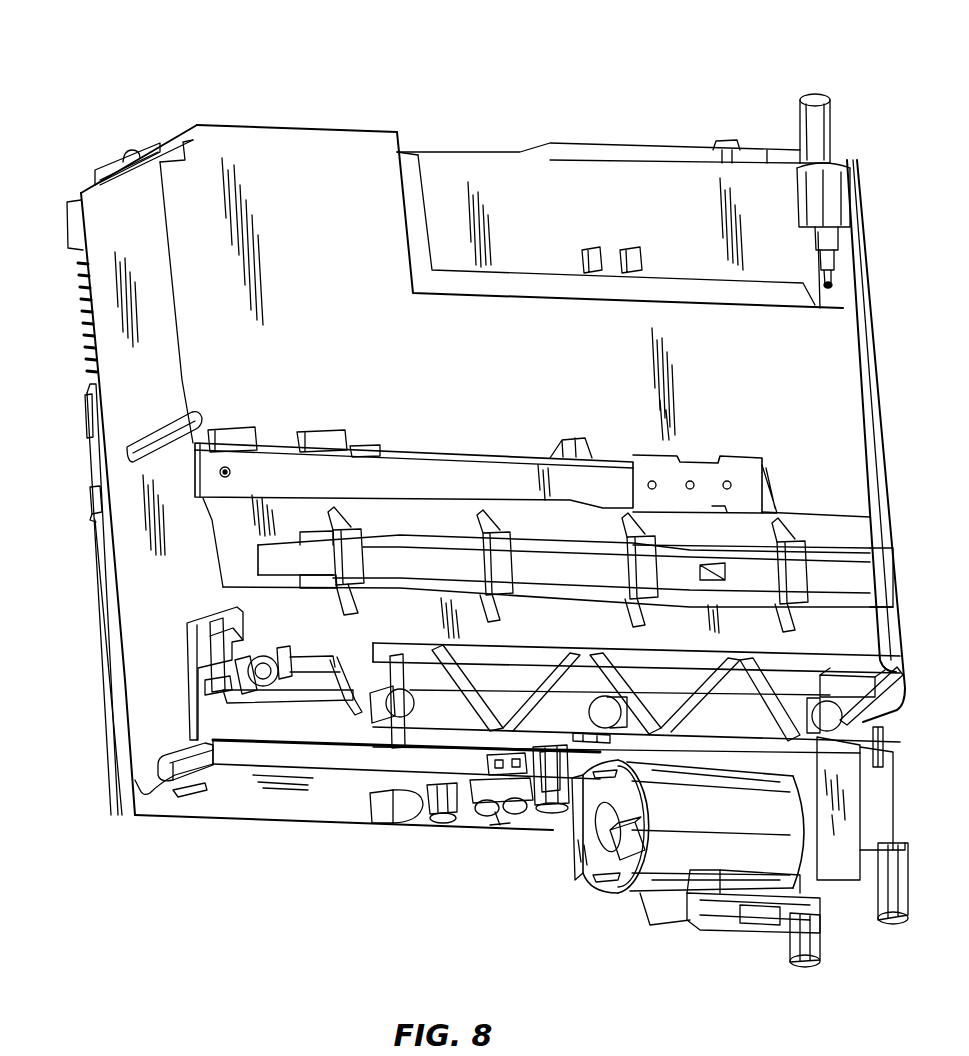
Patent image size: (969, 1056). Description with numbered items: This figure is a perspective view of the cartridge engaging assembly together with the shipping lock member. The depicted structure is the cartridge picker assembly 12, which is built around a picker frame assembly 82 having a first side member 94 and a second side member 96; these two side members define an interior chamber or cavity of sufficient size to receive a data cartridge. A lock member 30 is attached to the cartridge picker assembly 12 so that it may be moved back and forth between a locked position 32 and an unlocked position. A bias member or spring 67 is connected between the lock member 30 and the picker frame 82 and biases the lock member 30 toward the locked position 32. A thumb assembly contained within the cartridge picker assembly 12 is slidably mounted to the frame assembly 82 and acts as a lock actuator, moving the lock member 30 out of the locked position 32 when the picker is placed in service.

The cartridge picker assembly 12 is at (203, 53).
The picker frame assembly 82 is at (590, 134).
The first side member 94 is at (493, 381).
The second side member 96 is at (97, 452).
The lock member 30 is at (188, 653).
The locked position 32 is at (280, 650).
The spring 67 is at (285, 705).